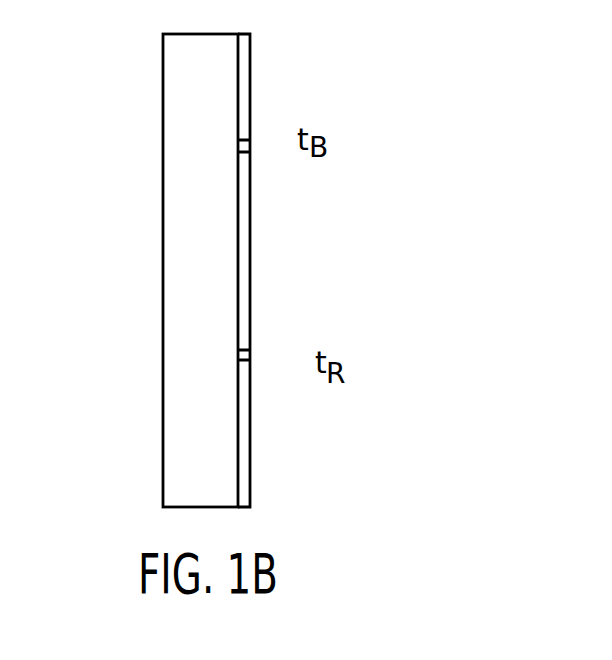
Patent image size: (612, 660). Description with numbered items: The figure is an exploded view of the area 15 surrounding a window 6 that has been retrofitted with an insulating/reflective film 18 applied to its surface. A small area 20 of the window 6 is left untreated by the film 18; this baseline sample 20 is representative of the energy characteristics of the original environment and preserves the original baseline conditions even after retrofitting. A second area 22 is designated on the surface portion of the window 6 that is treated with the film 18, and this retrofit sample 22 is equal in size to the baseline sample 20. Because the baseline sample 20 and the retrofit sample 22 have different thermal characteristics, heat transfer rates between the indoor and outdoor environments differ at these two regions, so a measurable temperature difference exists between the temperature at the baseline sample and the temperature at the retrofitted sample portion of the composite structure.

The window 6 is at (163, 178).
The area surrounding the window 15 is at (216, 270).
The film 18 is at (238, 252).
The baseline sample 20 is at (243, 150).
The retrofit sample 22 is at (250, 352).